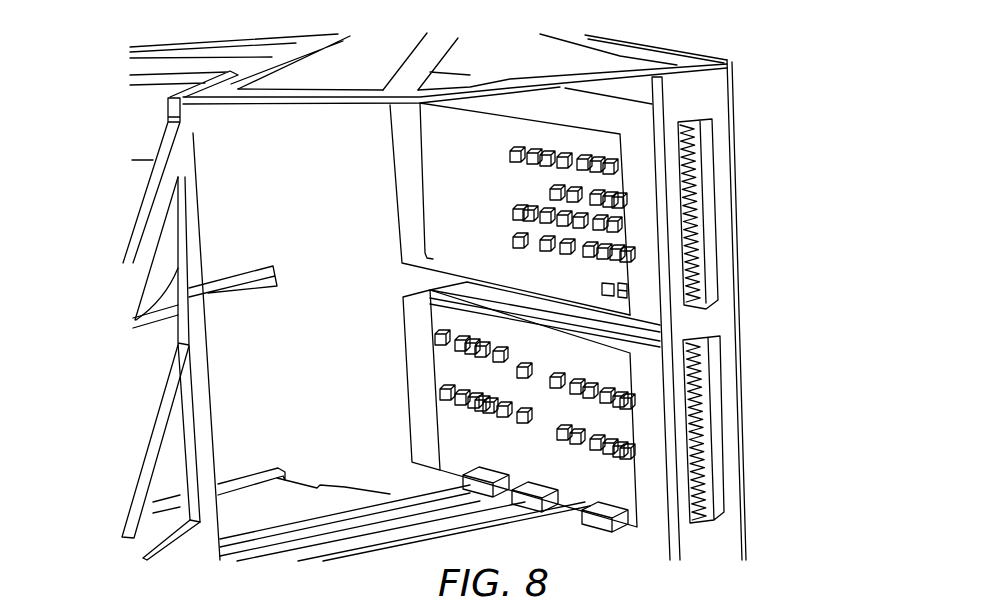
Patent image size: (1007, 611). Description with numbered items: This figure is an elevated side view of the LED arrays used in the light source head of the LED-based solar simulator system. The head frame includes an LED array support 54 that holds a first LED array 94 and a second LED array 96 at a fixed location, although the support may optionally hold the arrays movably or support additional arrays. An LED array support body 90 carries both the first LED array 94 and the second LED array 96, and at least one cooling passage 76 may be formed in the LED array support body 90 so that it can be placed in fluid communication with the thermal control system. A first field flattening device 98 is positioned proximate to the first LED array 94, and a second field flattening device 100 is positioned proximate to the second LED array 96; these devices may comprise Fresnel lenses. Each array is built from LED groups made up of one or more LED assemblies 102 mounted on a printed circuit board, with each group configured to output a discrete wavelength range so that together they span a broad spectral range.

The LED array support 54 is at (727, 76).
The LED array support body 90 is at (720, 130).
The cooling passage 76 is at (693, 183).
The first LED array 94 is at (650, 240).
The first field flattening device 98 is at (627, 290).
The second LED array 96 is at (655, 408).
The second field flattening device 100 is at (628, 447).
The LED assembly 102 is at (624, 471).